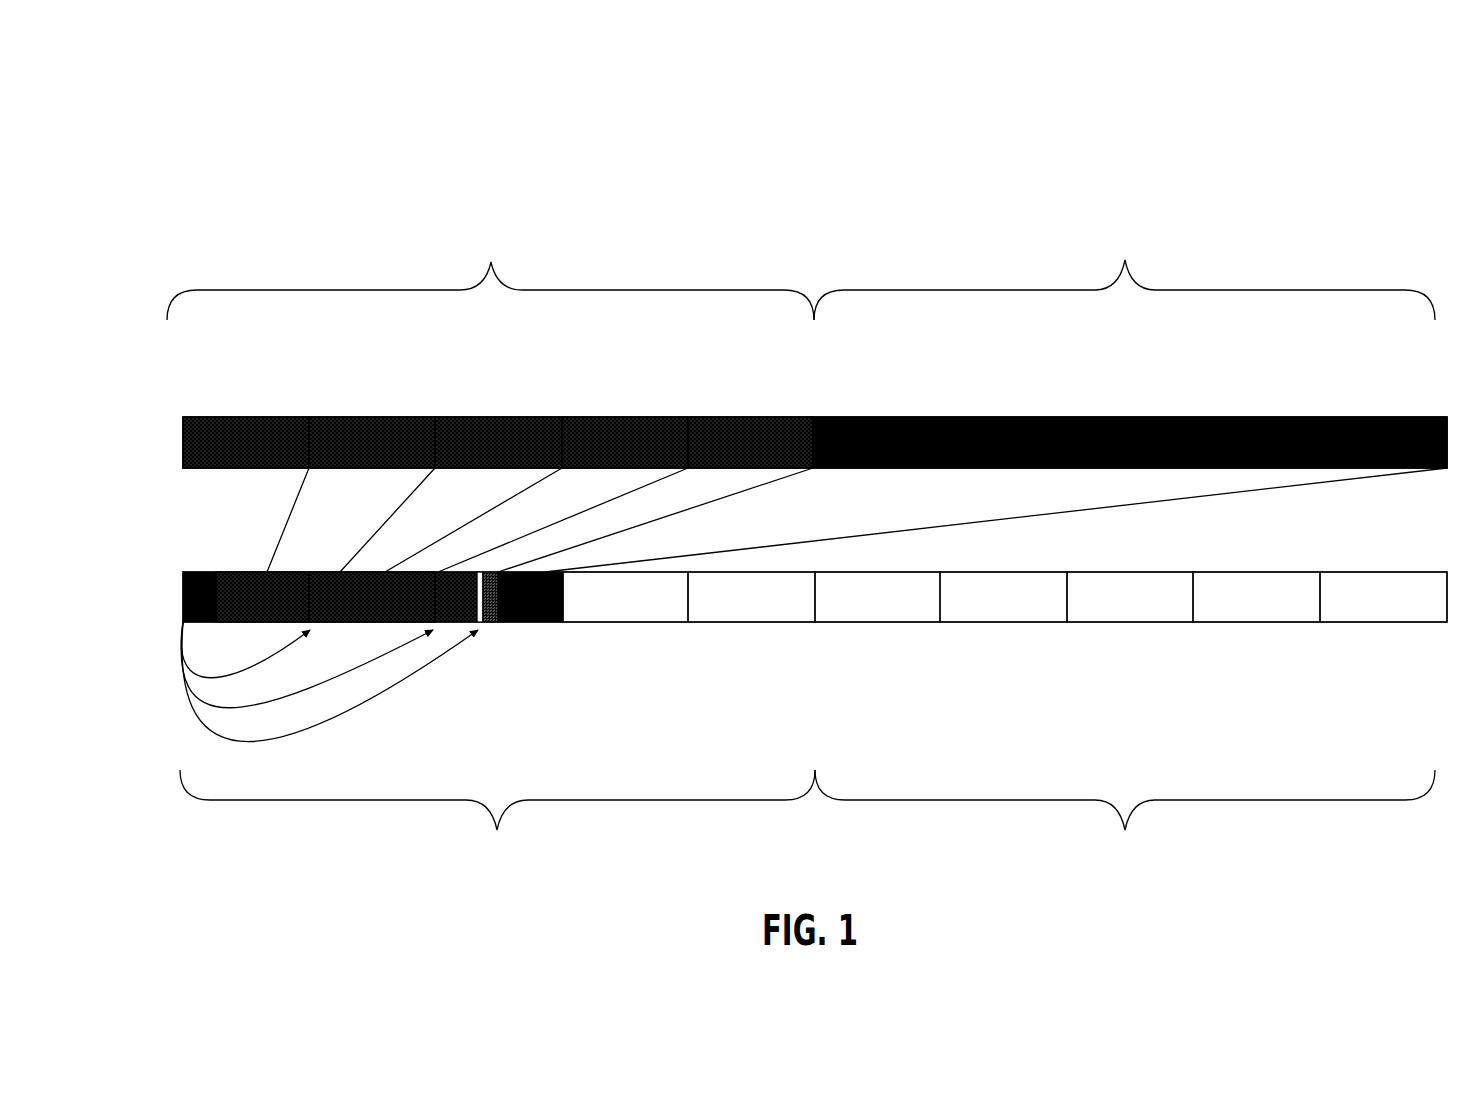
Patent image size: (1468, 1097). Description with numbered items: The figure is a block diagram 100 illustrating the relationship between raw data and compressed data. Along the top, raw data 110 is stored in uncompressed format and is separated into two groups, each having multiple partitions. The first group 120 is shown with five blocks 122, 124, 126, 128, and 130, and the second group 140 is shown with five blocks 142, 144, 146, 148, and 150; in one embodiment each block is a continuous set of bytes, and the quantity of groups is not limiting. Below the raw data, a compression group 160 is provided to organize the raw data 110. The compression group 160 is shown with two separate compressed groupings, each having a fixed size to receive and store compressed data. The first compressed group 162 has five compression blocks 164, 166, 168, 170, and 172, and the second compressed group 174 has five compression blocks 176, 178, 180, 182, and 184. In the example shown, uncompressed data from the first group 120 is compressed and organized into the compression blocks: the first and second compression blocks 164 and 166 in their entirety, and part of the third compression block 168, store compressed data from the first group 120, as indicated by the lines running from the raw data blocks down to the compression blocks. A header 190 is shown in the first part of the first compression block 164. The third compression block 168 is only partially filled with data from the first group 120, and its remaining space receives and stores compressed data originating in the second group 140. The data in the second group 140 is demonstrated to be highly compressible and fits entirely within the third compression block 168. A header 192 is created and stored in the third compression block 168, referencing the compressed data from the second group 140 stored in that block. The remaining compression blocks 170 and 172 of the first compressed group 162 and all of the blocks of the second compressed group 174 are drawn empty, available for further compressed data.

The block diagram 100 is at (831, 82).
The raw data 110 is at (183, 432).
The group_1 of raw data 120 is at (490, 269).
The block 122 is at (247, 417).
The block 124 is at (372, 417).
The block 126 is at (498, 417).
The block 128 is at (625, 417).
The block 130 is at (753, 417).
The group_2 of raw data 140 is at (1124, 269).
The block 142 is at (880, 417).
The block 144 is at (1007, 417).
The block 146 is at (1133, 417).
The block 148 is at (1260, 417).
The block 150 is at (1383, 417).
The compression group 160 is at (183, 597).
The first compressed group 162 is at (497, 822).
The compression block 164 is at (249, 572).
The compression block 166 is at (363, 572).
The compression block 168 is at (512, 572).
The compression block 170 is at (625, 623).
The compression block 172 is at (750, 623).
The second compressed group 174 is at (1125, 822).
The compression block 176 is at (877, 623).
The compression block 178 is at (1005, 623).
The compression block 180 is at (1130, 623).
The compression block 182 is at (1257, 623).
The compression block 184 is at (1383, 623).
The header 190 is at (200, 572).
The header 192 is at (492, 625).